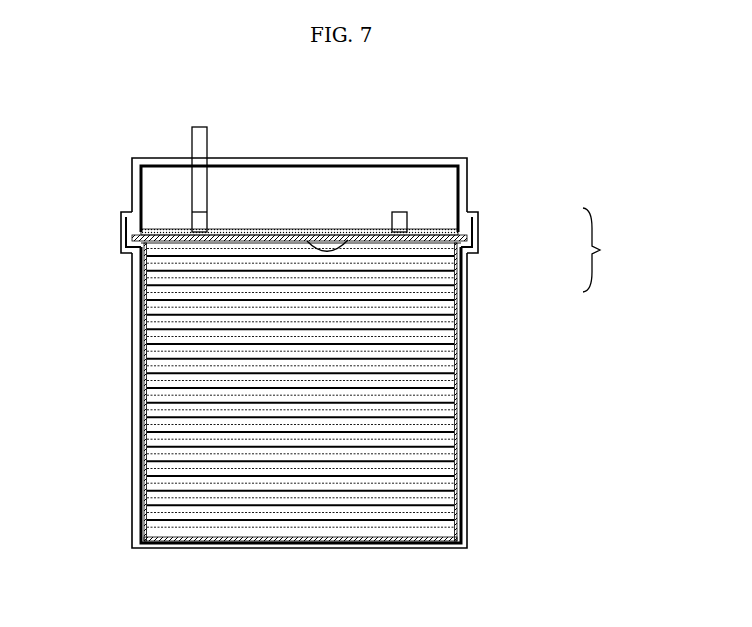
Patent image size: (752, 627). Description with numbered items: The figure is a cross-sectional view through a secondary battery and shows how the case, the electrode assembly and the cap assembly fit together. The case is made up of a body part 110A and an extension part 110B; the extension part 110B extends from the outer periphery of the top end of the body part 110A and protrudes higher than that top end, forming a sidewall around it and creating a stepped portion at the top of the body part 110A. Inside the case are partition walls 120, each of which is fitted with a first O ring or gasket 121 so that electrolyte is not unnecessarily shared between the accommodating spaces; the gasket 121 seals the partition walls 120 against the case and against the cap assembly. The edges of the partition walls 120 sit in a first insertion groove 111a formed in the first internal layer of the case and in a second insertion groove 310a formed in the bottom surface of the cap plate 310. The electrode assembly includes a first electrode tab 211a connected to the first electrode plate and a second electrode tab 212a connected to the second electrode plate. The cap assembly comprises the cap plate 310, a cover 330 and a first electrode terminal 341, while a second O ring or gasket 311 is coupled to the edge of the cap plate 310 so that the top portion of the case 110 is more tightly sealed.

The case 110 is at (612, 250).
The body part 110A is at (468, 285).
The extension part 110B is at (478, 233).
The first insertion groove 111a is at (147, 421).
The partition walls 120 is at (153, 372).
The first O ring or gasket 121 is at (136, 332).
The first electrode tab 211a is at (195, 220).
The second electrode tab 212a is at (398, 212).
The cap plate 310 is at (267, 231).
The second insertion groove 310a is at (348, 232).
The second O ring or gasket 311 is at (136, 233).
The cover 330 is at (445, 160).
The first electrode terminal 341 is at (199, 127).